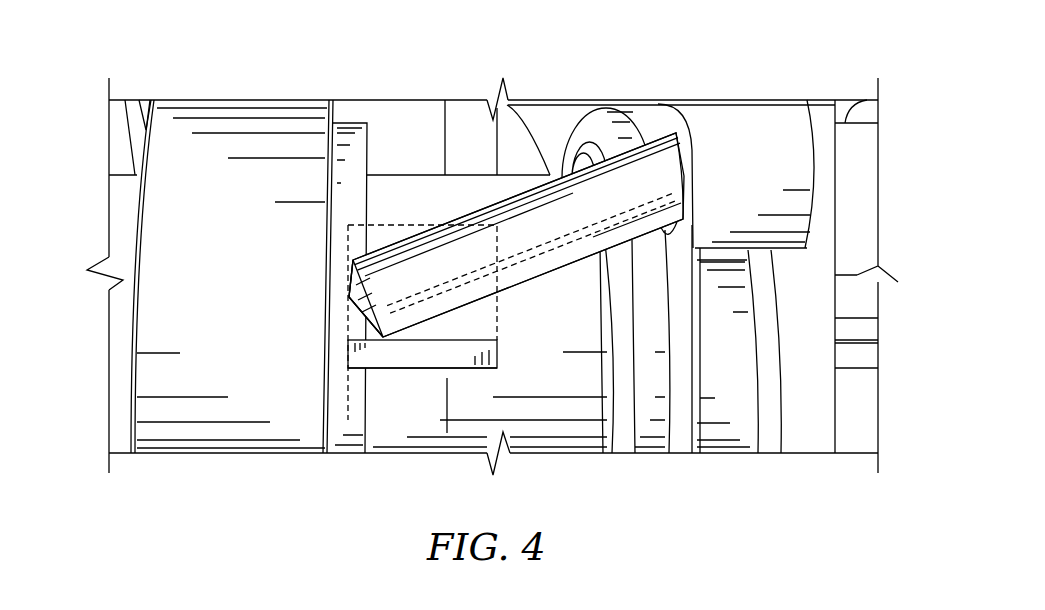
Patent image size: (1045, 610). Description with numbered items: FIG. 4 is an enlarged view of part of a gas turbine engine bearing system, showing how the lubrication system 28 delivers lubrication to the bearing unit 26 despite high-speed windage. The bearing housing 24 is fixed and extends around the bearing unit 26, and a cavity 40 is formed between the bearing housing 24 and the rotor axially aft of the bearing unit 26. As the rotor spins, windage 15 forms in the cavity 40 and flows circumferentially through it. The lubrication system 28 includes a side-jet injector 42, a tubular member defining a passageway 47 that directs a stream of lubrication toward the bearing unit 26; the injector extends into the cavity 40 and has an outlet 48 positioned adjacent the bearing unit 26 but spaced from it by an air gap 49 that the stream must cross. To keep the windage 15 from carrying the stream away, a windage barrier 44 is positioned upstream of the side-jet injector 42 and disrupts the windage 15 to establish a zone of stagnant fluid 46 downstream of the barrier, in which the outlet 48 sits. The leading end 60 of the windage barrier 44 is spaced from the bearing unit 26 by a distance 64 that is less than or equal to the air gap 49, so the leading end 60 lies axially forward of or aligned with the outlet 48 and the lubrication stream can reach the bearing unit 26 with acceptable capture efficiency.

The windage 15 is at (447, 403).
The bearing housing 24 is at (769, 127).
The bearing unit 26 is at (115, 249).
The lubrication system 28 is at (680, 122).
The cavity 40 is at (544, 364).
The side-jet injector 42 is at (549, 173).
The windage barrier 44 is at (410, 378).
The zone of stagnant fluid 46 is at (417, 223).
The passageway 47 is at (602, 202).
The outlet 48 is at (350, 308).
The air gap 49 is at (338, 265).
The leading end 60 is at (338, 348).
The distance 64 is at (387, 393).